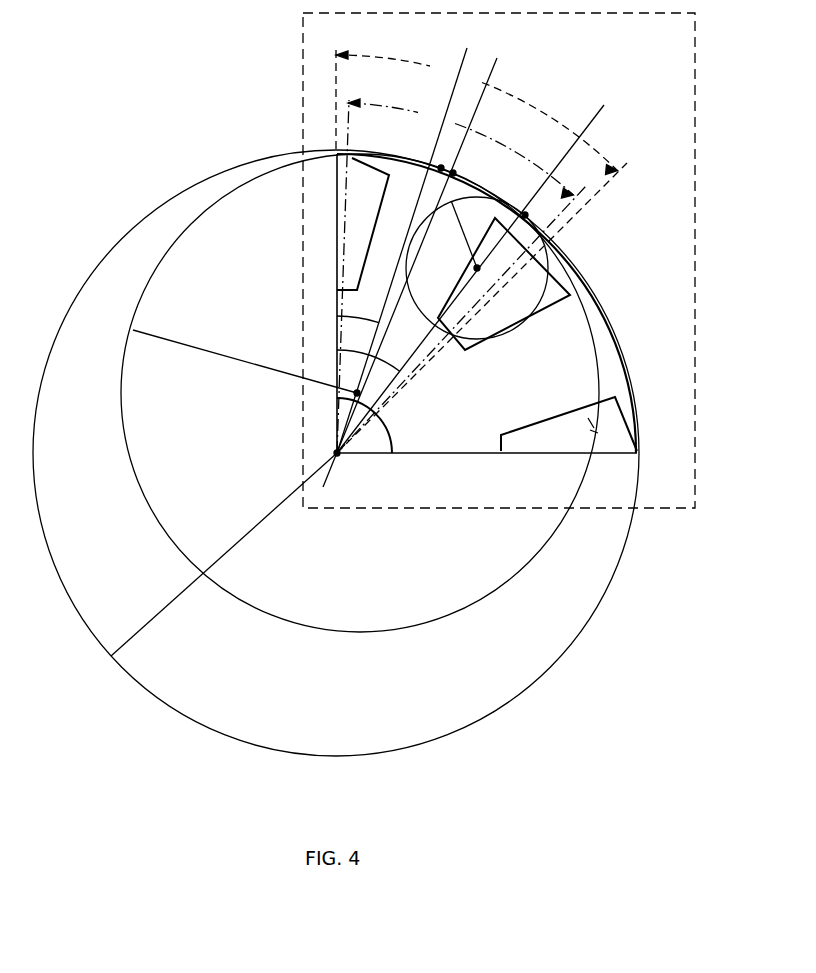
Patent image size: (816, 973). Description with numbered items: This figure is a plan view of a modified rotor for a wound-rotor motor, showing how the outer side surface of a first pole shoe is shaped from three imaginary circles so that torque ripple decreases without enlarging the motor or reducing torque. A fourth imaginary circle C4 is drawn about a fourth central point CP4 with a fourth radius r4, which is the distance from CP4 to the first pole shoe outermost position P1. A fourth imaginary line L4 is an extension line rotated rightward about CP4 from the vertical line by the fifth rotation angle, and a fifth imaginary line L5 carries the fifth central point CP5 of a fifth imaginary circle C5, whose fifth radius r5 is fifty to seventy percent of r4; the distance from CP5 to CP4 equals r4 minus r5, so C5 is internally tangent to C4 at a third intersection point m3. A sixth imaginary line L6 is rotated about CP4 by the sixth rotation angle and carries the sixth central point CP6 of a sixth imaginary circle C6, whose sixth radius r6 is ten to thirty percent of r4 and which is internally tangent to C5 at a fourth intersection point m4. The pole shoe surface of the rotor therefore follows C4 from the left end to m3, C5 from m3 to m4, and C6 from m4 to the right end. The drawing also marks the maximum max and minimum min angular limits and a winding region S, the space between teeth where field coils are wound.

The element rotor is at (487, 303).
The fourth imaginary circle C4 is at (548, 668).
The fifth imaginary circle C5 is at (363, 633).
The sixth imaginary circle C6 is at (548, 268).
The fourth radius r4 is at (224, 554).
The fifth radius r5 is at (245, 361).
The sixth radius r6 is at (461, 235).
The fourth central point CP4 is at (340, 457).
The fifth central point CP5 is at (355, 391).
The sixth central point CP6 is at (478, 272).
The fourth imaginary line L4 is at (420, 259).
The fifth imaginary line L5 is at (411, 235).
The sixth imaginary line L6 is at (483, 266).
The maximum angle max is at (477, 113).
The minimum angle min is at (460, 148).
The third intersection point m3 is at (443, 156).
The first pole shoe outermost position P1 is at (468, 170).
The fourth intersection point m4 is at (542, 215).
The winding region S is at (592, 414).